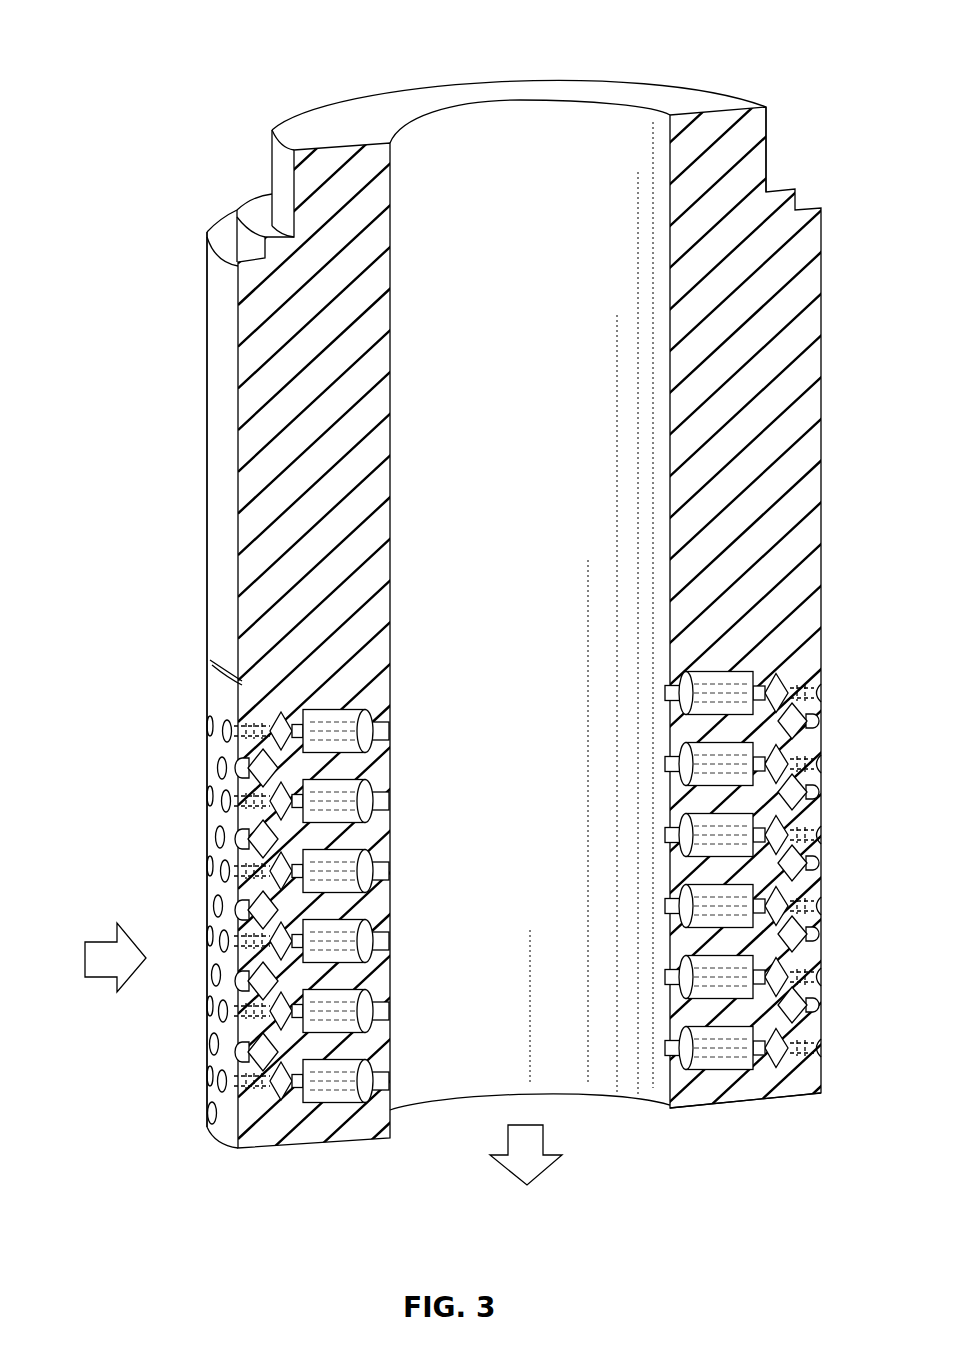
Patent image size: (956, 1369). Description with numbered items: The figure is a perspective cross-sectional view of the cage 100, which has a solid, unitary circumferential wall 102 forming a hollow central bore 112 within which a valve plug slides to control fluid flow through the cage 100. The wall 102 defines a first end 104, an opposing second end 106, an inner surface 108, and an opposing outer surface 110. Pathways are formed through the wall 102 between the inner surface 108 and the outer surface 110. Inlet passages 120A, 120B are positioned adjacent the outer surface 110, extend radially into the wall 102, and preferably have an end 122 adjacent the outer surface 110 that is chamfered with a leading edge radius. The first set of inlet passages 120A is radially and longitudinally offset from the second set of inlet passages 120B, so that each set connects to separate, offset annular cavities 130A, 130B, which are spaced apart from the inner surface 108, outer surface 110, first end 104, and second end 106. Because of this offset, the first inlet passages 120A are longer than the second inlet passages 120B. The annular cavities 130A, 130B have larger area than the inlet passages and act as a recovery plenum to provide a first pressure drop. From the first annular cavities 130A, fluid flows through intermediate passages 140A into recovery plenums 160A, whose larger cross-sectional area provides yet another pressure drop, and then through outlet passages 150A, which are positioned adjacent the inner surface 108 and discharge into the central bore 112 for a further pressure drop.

The cage 100 is at (278, 40).
The circumferential wall 102 is at (283, 302).
The first end 104 is at (659, 100).
The second end 106 is at (718, 1115).
The inner surface 108 is at (405, 214).
The outer surface 110 is at (200, 404).
The central bore 112 is at (555, 335).
The first set of inlet passages 120A is at (242, 723).
The second set of inlet passages 120B is at (248, 782).
The end of inlet passage 122 is at (233, 742).
The first set of annular cavities 130A is at (276, 713).
The second set of annular cavities 130B is at (262, 790).
The first set of intermediate passages 140A is at (292, 718).
The first set of outlet passages 150A is at (388, 712).
The first set of recovery plenums 160A is at (342, 702).